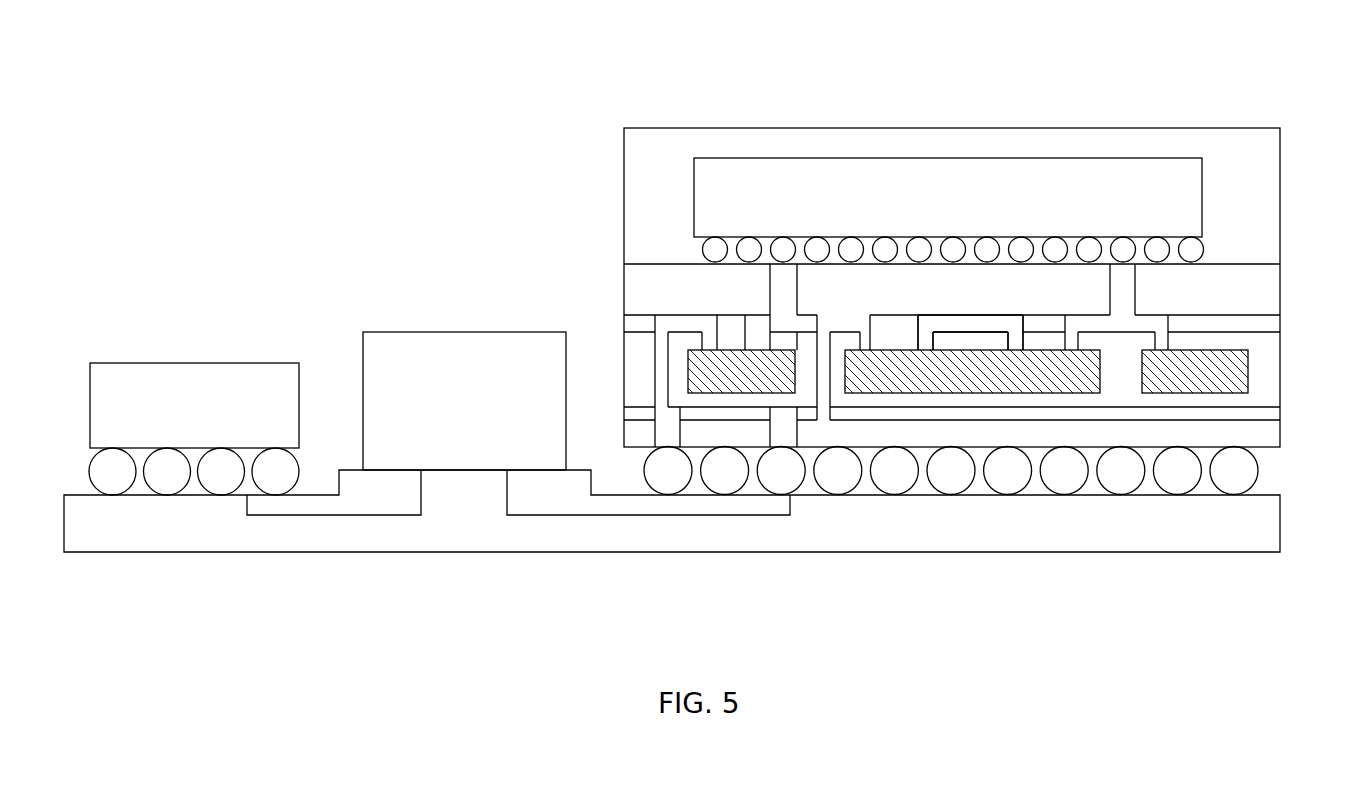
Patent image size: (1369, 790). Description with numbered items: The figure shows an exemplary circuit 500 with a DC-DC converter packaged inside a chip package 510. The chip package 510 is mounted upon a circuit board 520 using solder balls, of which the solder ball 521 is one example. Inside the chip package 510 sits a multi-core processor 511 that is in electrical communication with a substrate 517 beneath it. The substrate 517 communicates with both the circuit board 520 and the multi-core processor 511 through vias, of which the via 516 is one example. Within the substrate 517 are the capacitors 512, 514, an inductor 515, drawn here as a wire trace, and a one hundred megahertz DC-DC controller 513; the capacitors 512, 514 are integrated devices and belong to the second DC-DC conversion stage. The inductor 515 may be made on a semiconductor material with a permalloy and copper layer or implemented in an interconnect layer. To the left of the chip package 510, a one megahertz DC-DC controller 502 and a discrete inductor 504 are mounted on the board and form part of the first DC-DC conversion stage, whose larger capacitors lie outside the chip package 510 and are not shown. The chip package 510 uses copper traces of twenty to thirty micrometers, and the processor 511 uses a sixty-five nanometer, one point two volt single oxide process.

The circuit 500 is at (338, 98).
The 1 MHz DC-DC controller 502 is at (196, 363).
The inductor 504 is at (469, 332).
The chip package 510 is at (973, 128).
The multi-core processor 511 is at (1202, 170).
The capacitor 512 is at (729, 350).
The 100 MHz DC-DC controller 513 is at (894, 350).
The capacitor 514 is at (1221, 350).
The inductor 515 is at (963, 315).
The via 516 is at (1136, 303).
The substrate 517 is at (1287, 262).
The circuit board 520 is at (655, 552).
The solder ball 521 is at (1259, 470).